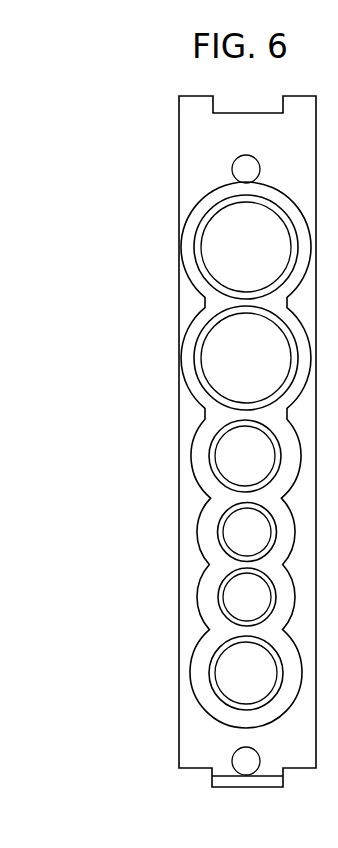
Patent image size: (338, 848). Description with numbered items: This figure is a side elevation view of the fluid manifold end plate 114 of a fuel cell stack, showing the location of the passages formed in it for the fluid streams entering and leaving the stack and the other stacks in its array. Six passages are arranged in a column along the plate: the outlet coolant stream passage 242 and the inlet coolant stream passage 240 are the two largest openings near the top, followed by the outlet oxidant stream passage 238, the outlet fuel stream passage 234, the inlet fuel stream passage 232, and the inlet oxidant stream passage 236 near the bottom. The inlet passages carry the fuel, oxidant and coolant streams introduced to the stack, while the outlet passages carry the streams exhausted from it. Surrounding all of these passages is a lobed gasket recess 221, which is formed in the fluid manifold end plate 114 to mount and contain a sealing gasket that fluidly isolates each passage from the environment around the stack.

The fluid manifold end plate 114 is at (192, 125).
The gasket recess 221 is at (218, 710).
The outlet coolant stream passage 242 is at (218, 239).
The inlet coolant stream passage 240 is at (217, 342).
The outlet oxidant stream passage 238 is at (227, 448).
The outlet fuel stream passage 234 is at (233, 527).
The inlet fuel stream passage 232 is at (237, 605).
The inlet oxidant stream passage 236 is at (228, 680).